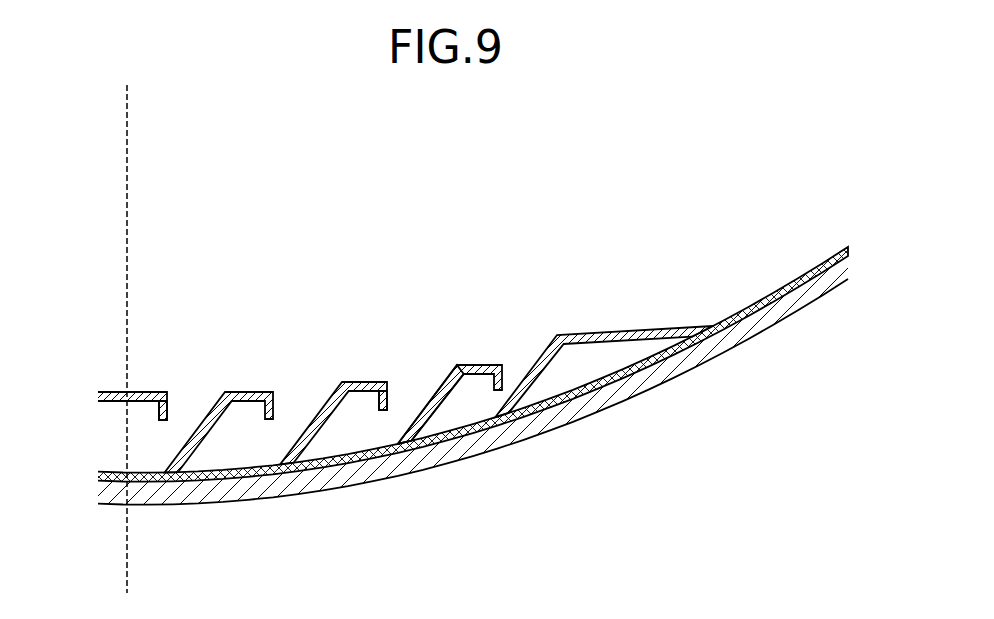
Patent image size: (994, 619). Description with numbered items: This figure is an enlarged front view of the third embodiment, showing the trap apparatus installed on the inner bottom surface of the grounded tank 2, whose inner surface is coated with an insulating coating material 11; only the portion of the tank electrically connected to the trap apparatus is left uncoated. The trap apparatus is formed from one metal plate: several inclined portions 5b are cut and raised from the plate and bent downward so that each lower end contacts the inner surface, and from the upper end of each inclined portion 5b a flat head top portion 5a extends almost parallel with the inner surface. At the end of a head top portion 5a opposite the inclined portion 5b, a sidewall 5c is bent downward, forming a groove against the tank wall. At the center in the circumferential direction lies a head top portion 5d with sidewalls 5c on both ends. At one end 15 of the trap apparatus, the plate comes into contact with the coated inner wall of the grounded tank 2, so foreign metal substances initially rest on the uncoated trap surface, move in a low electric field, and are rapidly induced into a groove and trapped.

The grounded tank 2 is at (675, 372).
The insulating coating material 11 is at (254, 472).
The head top portion 5a is at (365, 381).
The inclined portion 5b is at (428, 413).
The sidewall 5c is at (169, 406).
The head top portion 5d is at (143, 391).
The one end 15 is at (632, 312).